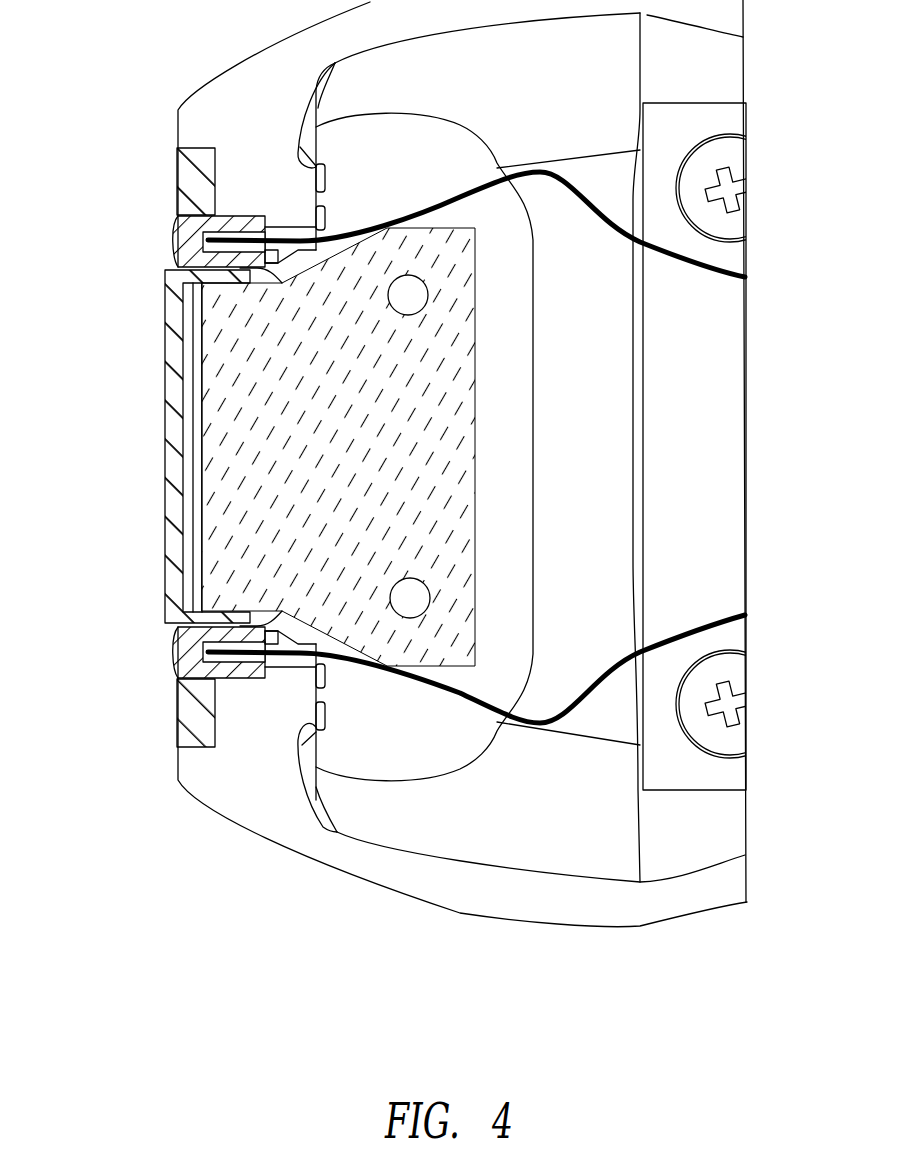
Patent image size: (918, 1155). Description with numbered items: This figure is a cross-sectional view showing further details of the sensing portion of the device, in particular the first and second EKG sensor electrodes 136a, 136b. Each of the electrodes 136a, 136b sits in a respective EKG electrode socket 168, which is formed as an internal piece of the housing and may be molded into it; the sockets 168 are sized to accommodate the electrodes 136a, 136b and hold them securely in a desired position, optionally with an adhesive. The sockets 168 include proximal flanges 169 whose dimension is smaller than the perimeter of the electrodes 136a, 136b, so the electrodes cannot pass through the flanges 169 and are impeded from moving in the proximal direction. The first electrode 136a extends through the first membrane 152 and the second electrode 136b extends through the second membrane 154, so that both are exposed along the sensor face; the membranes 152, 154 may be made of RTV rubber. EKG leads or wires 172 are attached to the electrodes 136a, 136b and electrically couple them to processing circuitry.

The first membrane 152 is at (177, 172).
The second membrane 154 is at (177, 722).
The first EKG sensor electrode 136a is at (176, 239).
The second EKG sensor electrode 136b is at (176, 652).
The EKG electrode socket 168 is at (247, 214).
The proximal flange 169 is at (258, 683).
The EKG lead or wire 172 is at (523, 168).